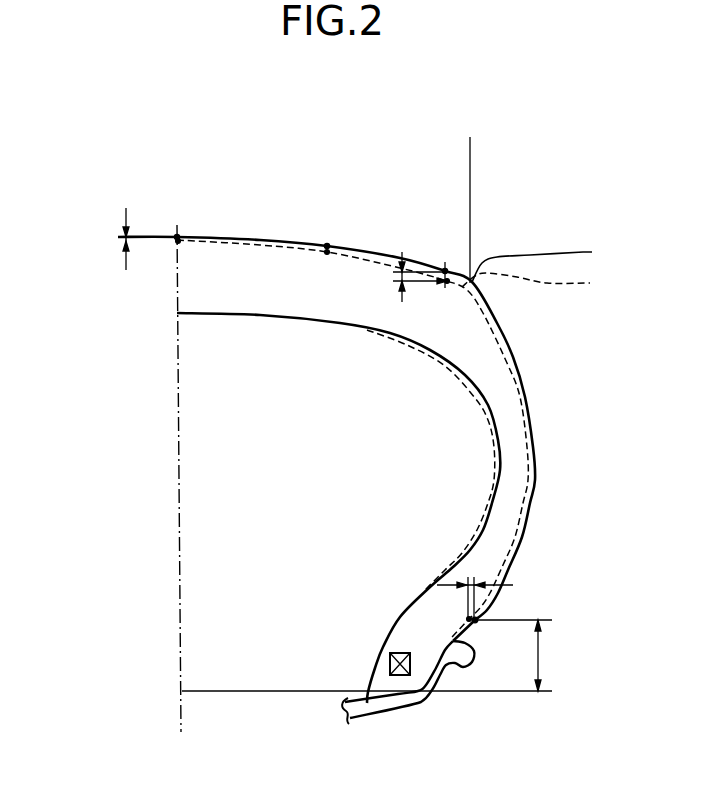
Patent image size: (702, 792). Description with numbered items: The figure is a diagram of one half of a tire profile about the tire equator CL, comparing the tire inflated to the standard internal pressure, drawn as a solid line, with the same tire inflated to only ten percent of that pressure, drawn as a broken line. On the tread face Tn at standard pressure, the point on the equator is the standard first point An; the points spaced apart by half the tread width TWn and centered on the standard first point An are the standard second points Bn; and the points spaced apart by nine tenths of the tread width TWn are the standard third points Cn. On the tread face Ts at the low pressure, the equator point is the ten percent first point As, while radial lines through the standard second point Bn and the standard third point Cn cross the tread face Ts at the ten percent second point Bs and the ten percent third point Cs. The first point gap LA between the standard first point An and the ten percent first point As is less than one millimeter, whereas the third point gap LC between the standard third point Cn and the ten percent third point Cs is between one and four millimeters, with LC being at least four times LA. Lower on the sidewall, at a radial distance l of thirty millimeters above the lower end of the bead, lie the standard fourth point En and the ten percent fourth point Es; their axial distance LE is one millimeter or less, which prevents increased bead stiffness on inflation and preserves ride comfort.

The tread width TWn is at (468, 151).
The tire equator CL is at (180, 600).
The first point gap LA is at (116, 237).
The standard first point An is at (177, 237).
The 10% first point As is at (178, 241).
The standard second point Bn is at (327, 246).
The 10% second point Bs is at (327, 252).
The standard third point Cn is at (446, 269).
The 10% third point Cs is at (447, 282).
The third point gap LC is at (393, 272).
The tread face at standard internal pressure Tn is at (547, 257).
The tread face at 10% internal pressure Ts is at (541, 282).
The axial distance between fourth points LE is at (473, 578).
The 10% fourth point Es is at (467, 616).
The standard fourth point En is at (478, 618).
The radial distance from bead lower end l is at (538, 653).